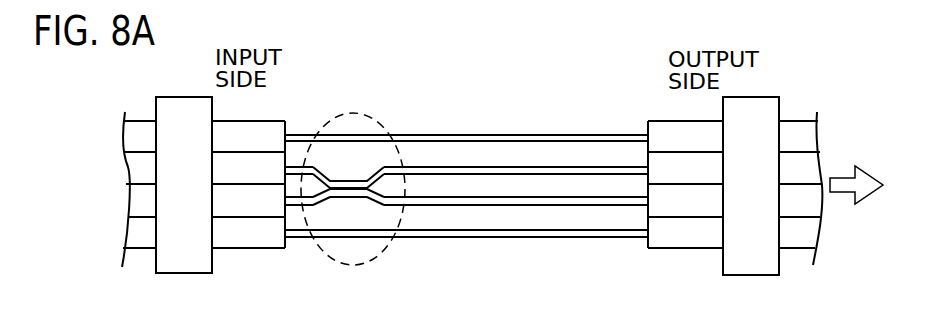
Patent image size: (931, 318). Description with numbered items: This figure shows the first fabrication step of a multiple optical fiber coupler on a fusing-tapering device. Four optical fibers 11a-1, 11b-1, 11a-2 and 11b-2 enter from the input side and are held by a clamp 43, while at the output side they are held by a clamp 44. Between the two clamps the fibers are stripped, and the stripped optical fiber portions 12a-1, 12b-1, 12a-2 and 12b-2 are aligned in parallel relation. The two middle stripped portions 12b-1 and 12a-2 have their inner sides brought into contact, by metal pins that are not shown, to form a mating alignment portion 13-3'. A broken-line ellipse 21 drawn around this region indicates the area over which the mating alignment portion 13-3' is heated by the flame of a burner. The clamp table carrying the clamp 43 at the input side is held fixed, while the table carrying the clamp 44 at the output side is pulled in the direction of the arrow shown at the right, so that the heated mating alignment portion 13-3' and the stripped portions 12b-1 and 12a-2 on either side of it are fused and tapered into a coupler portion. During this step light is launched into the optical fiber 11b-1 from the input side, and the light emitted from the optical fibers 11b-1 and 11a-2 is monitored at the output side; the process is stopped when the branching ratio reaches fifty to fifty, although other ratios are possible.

The optical fiber 11a-1 is at (128, 135).
The optical fiber 11b-1 is at (133, 168).
The optical fiber 11a-2 is at (133, 198).
The optical fiber 11b-2 is at (128, 232).
The stripped optical fiber portion 12a-1 is at (465, 135).
The stripped optical fiber portion 12b-1 is at (490, 167).
The stripped optical fiber portion 12a-2 is at (455, 205).
The stripped optical fiber portion 12b-2 is at (520, 237).
The mating alignment portion 13-3' is at (366, 140).
The broken-line ellipse 21 is at (353, 258).
The clamp 43 is at (182, 273).
The clamp 44 is at (745, 275).